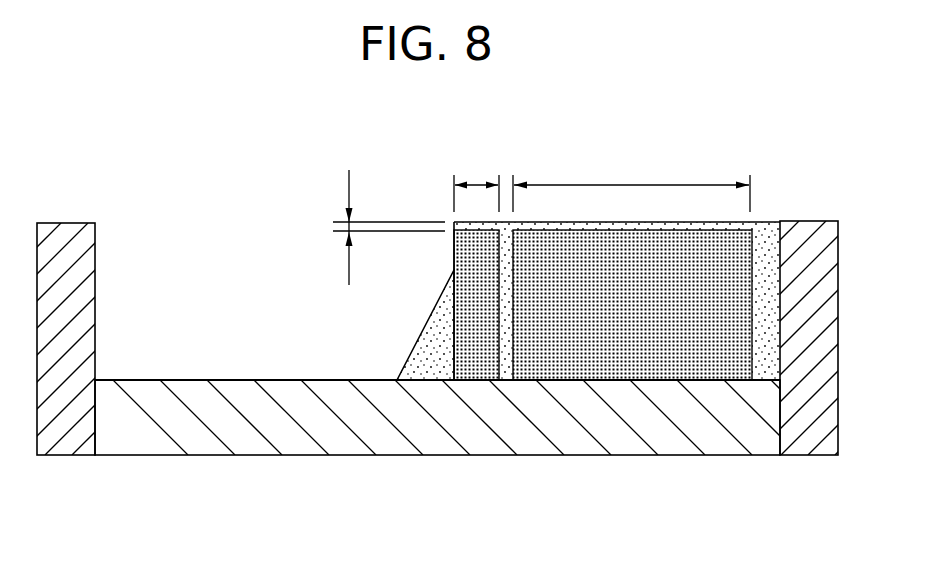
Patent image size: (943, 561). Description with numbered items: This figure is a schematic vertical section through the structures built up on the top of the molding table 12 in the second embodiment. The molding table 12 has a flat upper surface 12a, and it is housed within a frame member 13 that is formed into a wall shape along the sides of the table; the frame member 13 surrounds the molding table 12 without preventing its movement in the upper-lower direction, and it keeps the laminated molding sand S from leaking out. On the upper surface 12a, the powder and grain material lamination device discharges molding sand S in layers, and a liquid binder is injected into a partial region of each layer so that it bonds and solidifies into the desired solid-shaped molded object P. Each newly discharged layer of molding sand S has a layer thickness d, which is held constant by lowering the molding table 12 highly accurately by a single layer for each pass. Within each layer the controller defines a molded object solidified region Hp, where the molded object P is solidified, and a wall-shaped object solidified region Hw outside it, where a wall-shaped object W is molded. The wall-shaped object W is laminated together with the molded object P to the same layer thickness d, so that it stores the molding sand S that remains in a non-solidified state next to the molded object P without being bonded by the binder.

The molding table 12 is at (437, 443).
The upper surface 12a is at (230, 380).
The frame member 13 is at (66, 229).
The wall-shaped object W is at (475, 257).
The molded object P is at (630, 345).
The molding sand S is at (432, 360).
The layer thickness d is at (382, 226).
The wall-shaped object solidified region Hw is at (476, 179).
The molded object solidified region Hp is at (631, 179).